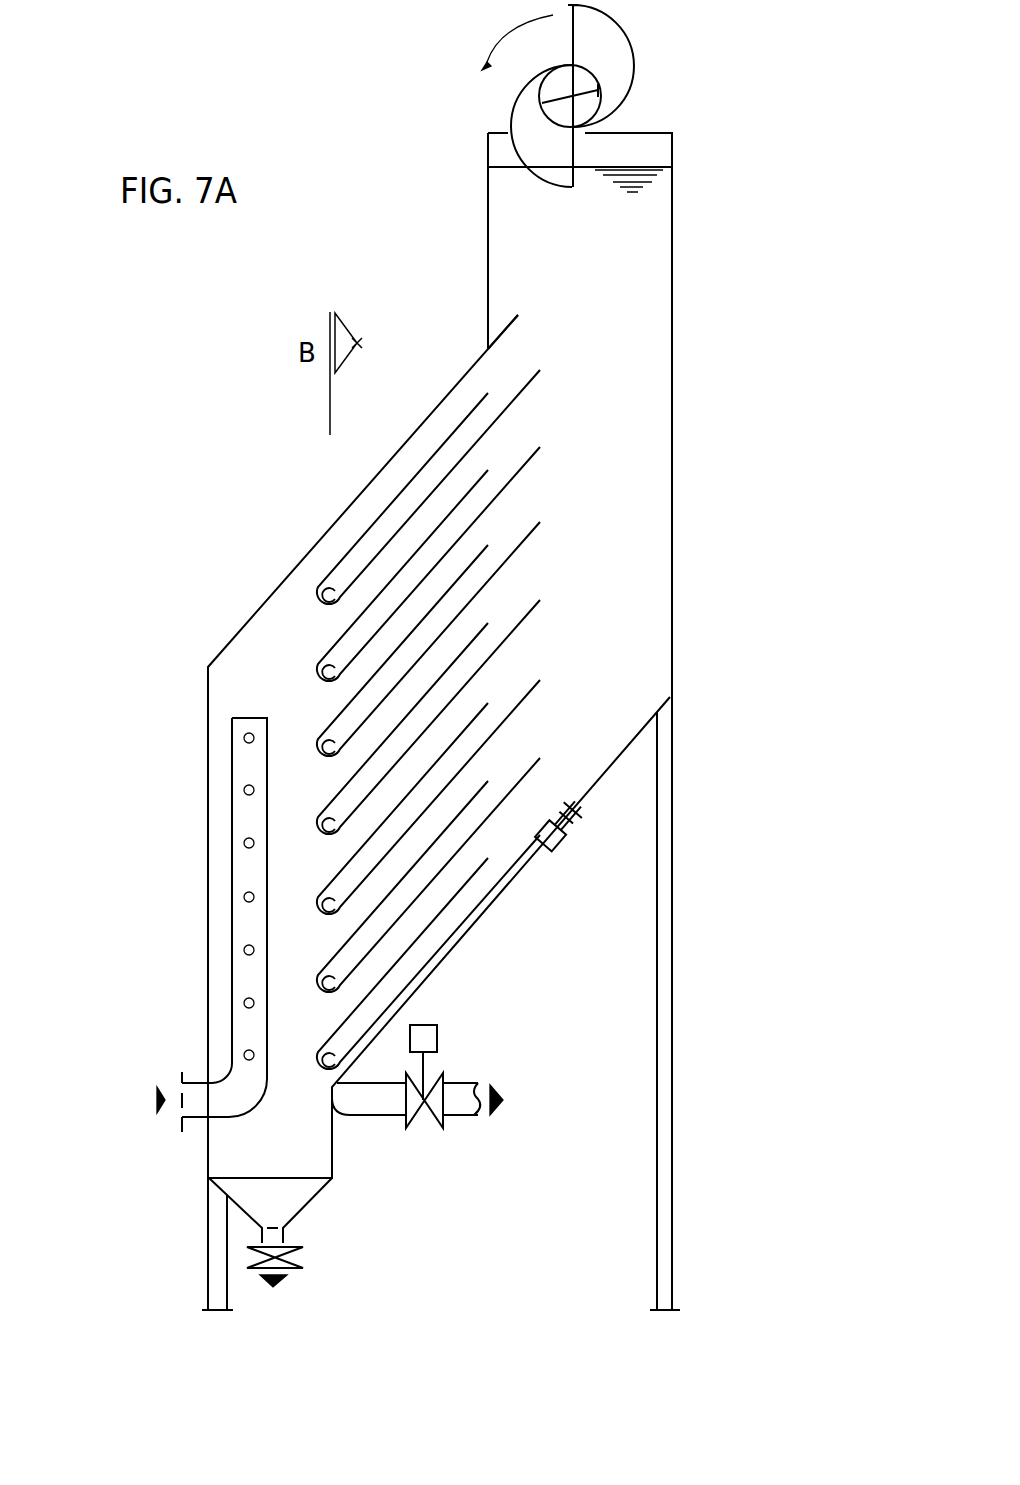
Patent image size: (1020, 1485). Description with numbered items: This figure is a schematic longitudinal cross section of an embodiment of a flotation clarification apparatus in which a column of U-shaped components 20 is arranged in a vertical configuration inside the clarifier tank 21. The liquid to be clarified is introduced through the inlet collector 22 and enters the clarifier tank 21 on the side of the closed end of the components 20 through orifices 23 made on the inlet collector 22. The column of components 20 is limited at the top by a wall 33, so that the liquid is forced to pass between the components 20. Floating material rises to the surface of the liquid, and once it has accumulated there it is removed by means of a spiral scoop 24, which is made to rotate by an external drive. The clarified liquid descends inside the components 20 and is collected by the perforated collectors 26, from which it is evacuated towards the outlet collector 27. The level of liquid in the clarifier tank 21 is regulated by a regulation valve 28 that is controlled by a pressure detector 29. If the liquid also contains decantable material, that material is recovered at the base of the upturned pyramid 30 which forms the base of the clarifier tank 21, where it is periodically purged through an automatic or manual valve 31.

The U-shaped components 20 is at (330, 722).
The clarifier tank 21 is at (672, 403).
The inlet collector 22 is at (243, 1110).
The orifices 23 is at (255, 953).
The spiral scoop 24 is at (513, 98).
The perforated collectors 26 is at (322, 755).
The outlet collector 27 is at (460, 1117).
The regulation valve 28 is at (423, 1115).
The pressure detector 29 is at (600, 857).
The upturned pyramid 30 is at (302, 1193).
The valve 31 is at (305, 1257).
The wall 33 is at (352, 507).